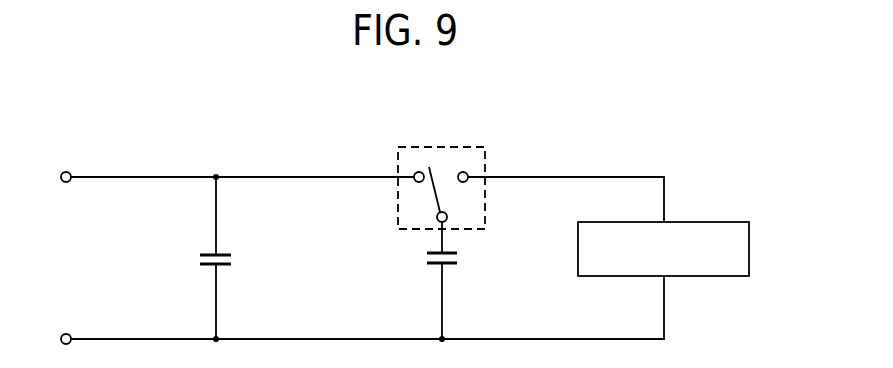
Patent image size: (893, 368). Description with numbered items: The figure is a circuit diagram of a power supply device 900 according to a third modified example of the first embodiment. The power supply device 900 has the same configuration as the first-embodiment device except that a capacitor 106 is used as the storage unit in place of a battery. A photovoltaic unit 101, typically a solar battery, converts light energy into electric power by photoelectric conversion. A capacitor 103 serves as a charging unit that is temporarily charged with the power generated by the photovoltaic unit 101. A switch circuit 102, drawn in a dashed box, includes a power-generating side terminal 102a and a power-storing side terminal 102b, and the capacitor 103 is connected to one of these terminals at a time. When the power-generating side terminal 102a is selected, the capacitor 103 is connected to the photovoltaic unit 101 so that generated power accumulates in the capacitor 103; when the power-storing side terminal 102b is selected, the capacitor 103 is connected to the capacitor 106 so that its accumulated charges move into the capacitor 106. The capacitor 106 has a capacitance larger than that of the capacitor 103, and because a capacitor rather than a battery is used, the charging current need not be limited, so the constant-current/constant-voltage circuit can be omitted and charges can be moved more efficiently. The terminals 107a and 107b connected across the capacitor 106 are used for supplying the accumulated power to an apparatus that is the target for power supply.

The power supply device 900 is at (613, 103).
The photovoltaic unit 101 is at (718, 221).
The switch circuit 102 is at (472, 171).
The power-generating side terminal 102a is at (467, 171).
The power-storing side terminal 102b is at (419, 171).
The capacitor 103 is at (432, 268).
The capacitor 106 is at (206, 271).
The terminal 107a is at (70, 172).
The terminal 107b is at (70, 334).